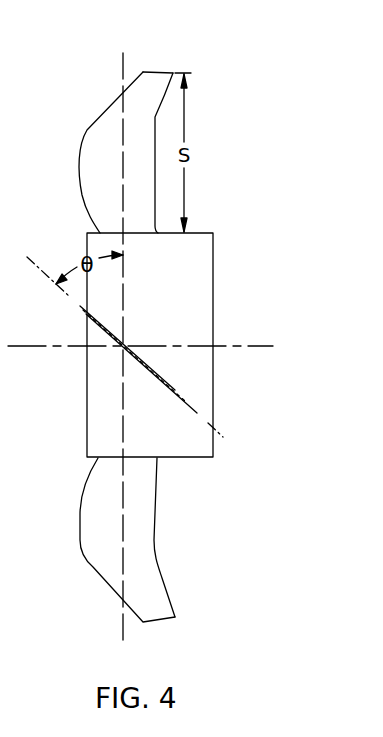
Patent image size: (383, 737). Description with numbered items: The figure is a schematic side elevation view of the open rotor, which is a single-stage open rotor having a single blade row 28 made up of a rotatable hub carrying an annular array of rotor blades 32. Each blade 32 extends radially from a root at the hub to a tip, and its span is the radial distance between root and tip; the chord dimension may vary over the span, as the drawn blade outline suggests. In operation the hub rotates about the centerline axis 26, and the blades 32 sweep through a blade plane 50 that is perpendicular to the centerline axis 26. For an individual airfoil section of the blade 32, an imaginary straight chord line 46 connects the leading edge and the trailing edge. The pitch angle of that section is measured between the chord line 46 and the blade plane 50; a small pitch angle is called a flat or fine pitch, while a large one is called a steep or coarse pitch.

The centerline axis 26 is at (235, 344).
The blade row 28 is at (172, 45).
The rotor blade 32 is at (82, 124).
The chord line 46 is at (83, 320).
The blade plane 50 is at (122, 68).